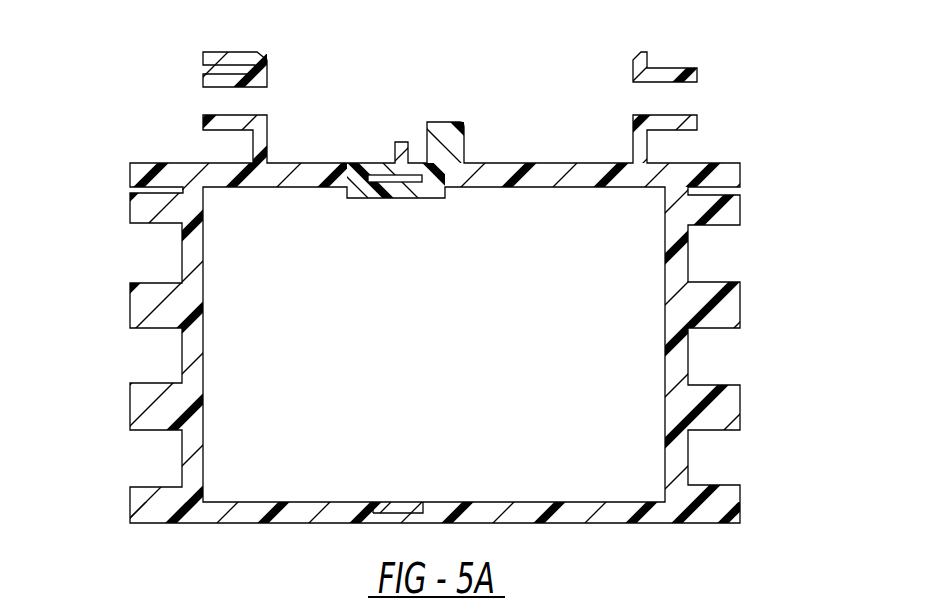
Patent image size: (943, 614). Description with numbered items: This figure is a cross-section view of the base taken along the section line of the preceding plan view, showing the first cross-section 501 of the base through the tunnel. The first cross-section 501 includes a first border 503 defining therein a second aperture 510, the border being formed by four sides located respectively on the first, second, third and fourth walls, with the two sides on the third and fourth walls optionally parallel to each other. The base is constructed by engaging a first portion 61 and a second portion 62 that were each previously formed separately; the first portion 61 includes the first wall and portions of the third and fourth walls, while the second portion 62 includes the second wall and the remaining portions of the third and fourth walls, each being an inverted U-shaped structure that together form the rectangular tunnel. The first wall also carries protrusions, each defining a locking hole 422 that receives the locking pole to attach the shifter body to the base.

The locking hole 422 is at (212, 102).
The second portion 62 is at (575, 82).
The first border 503 is at (730, 289).
The second aperture 510 is at (474, 336).
The first cross-section 501 is at (105, 347).
The first portion 61 is at (167, 533).